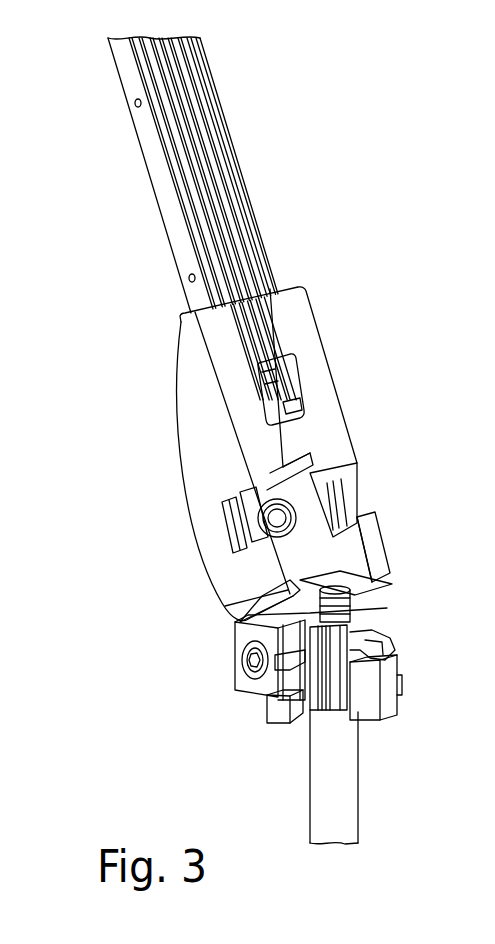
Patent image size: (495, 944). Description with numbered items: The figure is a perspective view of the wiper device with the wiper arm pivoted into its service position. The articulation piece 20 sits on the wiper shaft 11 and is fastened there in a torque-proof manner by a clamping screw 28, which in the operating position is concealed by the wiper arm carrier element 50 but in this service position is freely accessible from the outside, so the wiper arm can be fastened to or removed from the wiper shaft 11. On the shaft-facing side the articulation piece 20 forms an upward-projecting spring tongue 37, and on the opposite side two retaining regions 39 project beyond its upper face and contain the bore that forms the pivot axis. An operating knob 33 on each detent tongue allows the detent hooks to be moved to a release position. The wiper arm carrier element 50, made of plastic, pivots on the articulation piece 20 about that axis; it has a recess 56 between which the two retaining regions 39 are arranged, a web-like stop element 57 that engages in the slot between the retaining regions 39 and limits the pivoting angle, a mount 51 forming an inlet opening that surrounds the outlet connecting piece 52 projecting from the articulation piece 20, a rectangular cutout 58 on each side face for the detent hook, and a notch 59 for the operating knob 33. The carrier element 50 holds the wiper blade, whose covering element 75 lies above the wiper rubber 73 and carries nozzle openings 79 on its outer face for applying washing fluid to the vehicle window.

The wiper shaft 11 is at (362, 797).
The articulation piece 20 is at (388, 699).
The clamping screw 28 is at (258, 681).
The operating knob 33 is at (280, 712).
The spring tongue 37 is at (384, 640).
The retaining region 39 is at (369, 576).
The wiper arm carrier element 50 is at (164, 413).
The mount 51 is at (340, 492).
The outlet connecting piece 52 is at (352, 603).
The recess 56 is at (358, 590).
The stop element 57 is at (290, 592).
The rectangular cutout 58 is at (238, 505).
The notch 59 is at (258, 528).
The wiper rubber 73 is at (213, 152).
The covering element 75 is at (160, 198).
The nozzle opening 79 is at (135, 106).